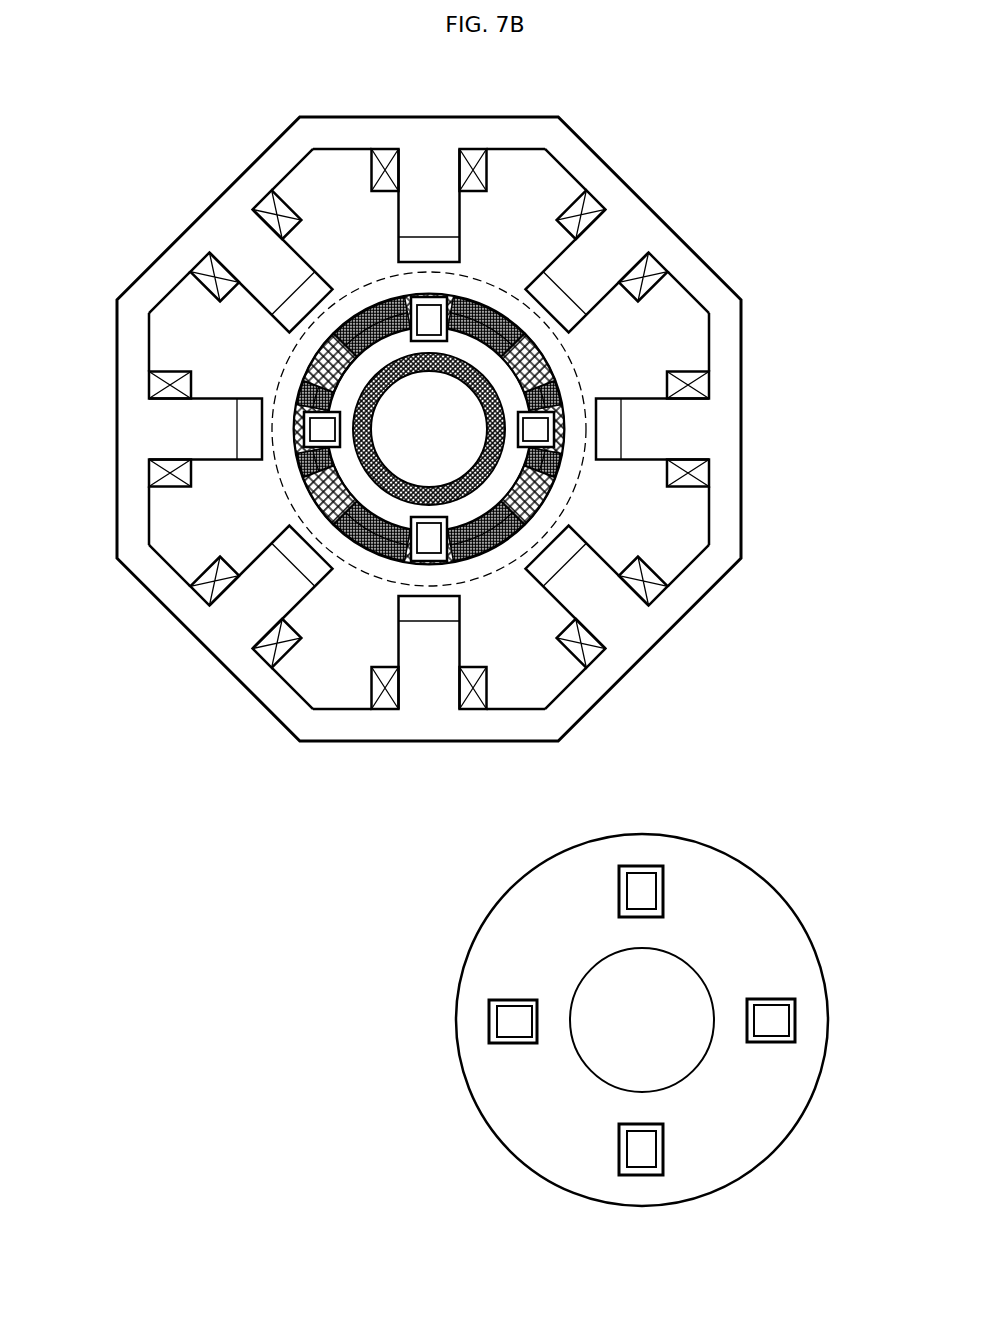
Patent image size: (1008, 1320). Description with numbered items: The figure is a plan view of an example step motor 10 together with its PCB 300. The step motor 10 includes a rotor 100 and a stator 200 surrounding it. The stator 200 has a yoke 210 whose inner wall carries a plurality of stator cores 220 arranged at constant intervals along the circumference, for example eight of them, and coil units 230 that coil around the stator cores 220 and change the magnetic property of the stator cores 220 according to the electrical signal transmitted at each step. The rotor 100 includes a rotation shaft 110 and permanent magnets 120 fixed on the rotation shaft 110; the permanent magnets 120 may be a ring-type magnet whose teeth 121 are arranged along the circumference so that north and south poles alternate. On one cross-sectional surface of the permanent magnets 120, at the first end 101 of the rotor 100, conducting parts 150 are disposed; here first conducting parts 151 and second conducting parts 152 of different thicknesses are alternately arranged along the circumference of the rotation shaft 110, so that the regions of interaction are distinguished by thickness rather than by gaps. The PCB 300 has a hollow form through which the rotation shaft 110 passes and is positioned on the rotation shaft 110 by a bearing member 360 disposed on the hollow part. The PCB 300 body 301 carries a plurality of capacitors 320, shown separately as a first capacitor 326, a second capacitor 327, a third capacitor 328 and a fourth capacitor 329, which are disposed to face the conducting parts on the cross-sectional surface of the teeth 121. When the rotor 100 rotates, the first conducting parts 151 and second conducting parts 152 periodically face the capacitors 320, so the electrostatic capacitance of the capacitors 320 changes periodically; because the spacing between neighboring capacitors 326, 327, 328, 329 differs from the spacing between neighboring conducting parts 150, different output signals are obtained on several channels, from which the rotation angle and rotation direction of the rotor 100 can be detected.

The step motor 10 is at (463, 649).
The rotor 100 is at (435, 422).
The first end 101 is at (367, 357).
The rotation shaft 110 is at (417, 467).
The permanent magnets 120 is at (310, 492).
The teeth 121 is at (548, 492).
The conducting part 150 is at (552, 360).
The first conducting parts 151 is at (492, 303).
The second conducting parts 152 is at (545, 380).
The stator 200 is at (429, 403).
The yoke 210 is at (360, 130).
The stator cores 220 is at (425, 215).
The coil units 230 is at (472, 165).
The PCB 300 is at (463, 735).
The plate body 301 is at (572, 866).
The capacitor 320 is at (427, 540).
The first capacitor 326 is at (641, 884).
The second capacitor 327 is at (780, 1020).
The third capacitor 328 is at (641, 1155).
The fourth capacitor 329 is at (503, 1020).
The bearing member 360 is at (318, 432).